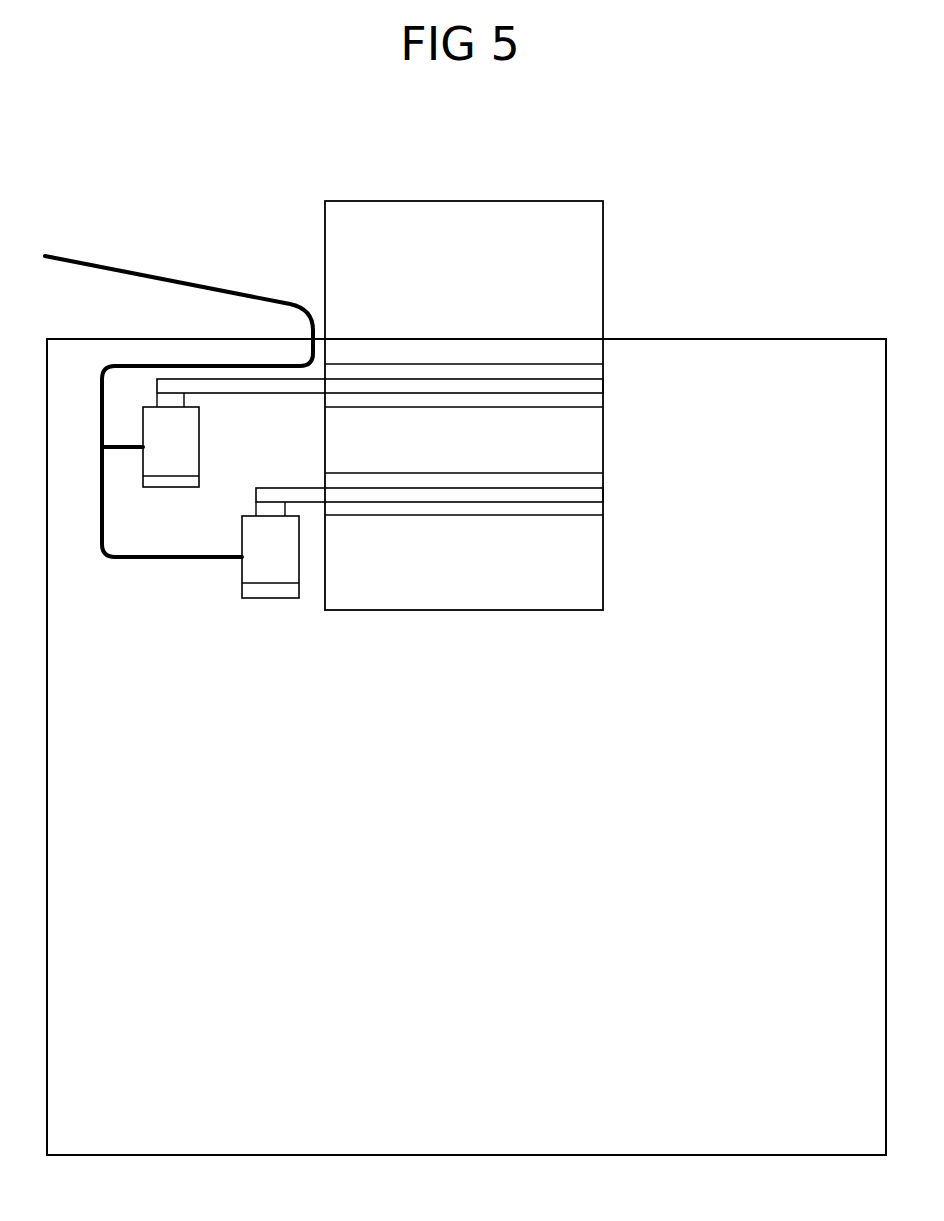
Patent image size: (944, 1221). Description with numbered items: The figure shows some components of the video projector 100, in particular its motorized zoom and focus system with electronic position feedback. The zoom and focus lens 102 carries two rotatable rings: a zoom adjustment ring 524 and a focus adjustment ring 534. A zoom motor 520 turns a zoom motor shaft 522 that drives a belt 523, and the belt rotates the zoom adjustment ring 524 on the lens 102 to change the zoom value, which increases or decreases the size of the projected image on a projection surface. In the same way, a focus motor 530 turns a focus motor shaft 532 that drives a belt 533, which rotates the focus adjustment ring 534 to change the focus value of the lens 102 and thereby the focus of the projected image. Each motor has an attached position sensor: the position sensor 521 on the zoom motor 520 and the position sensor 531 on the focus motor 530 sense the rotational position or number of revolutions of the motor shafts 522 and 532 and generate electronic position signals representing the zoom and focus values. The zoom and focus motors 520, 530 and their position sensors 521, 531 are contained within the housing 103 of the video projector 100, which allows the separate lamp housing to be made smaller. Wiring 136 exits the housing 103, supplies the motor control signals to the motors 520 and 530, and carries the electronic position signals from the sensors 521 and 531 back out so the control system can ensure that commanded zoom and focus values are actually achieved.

The video projector 100 is at (485, 836).
The zoom and focus lens 102 is at (478, 284).
The housing 103 is at (675, 329).
The wiring 136 is at (123, 287).
The zoom motor 520 is at (203, 448).
The position sensor 521 is at (152, 493).
The zoom motor shaft 522 is at (157, 402).
The belt 523 is at (300, 395).
The zoom adjustment ring 524 is at (430, 410).
The focus motor 530 is at (238, 563).
The position sensor 531 is at (263, 603).
The focus motor shaft 532 is at (250, 507).
The belt 533 is at (310, 485).
The focus adjustment ring 534 is at (418, 520).